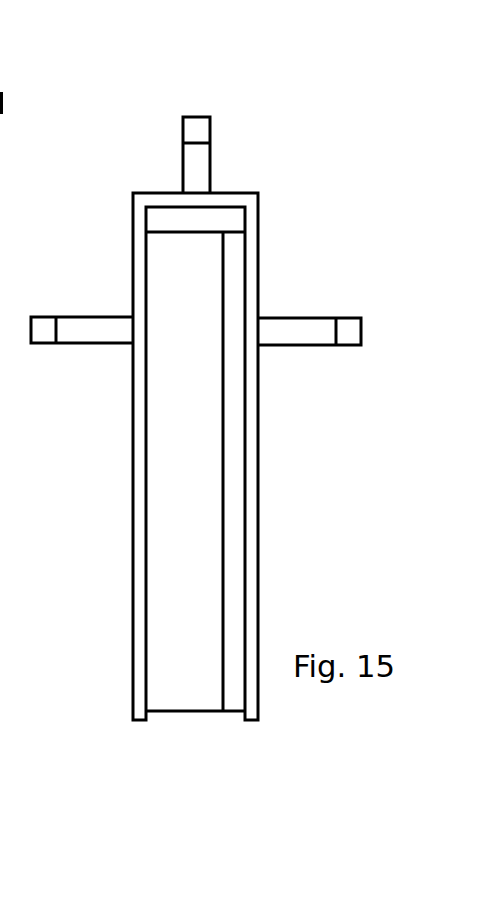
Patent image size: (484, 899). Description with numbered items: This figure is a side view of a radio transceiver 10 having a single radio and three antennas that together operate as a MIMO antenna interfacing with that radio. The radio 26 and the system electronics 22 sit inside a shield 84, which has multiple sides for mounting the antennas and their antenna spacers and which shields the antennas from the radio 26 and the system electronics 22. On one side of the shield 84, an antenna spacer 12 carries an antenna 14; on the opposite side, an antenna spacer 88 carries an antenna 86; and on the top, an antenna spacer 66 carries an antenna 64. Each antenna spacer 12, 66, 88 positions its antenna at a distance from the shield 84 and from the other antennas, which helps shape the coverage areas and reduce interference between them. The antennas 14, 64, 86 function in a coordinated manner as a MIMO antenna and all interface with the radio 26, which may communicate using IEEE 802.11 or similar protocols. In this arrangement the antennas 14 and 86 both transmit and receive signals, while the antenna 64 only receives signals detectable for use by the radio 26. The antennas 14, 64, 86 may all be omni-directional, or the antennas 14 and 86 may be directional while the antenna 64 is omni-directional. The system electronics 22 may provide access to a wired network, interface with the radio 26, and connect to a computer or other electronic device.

The radio transceiver 10 is at (218, 43).
The shield 84 is at (133, 655).
The radio 26 is at (188, 712).
The system electronics 22 is at (233, 712).
The antenna spacer 66 is at (183, 172).
The antenna 64 is at (183, 122).
The antenna spacer 12 is at (92, 315).
The antenna 14 is at (40, 317).
The antenna spacer 88 is at (308, 318).
The antenna 86 is at (352, 318).